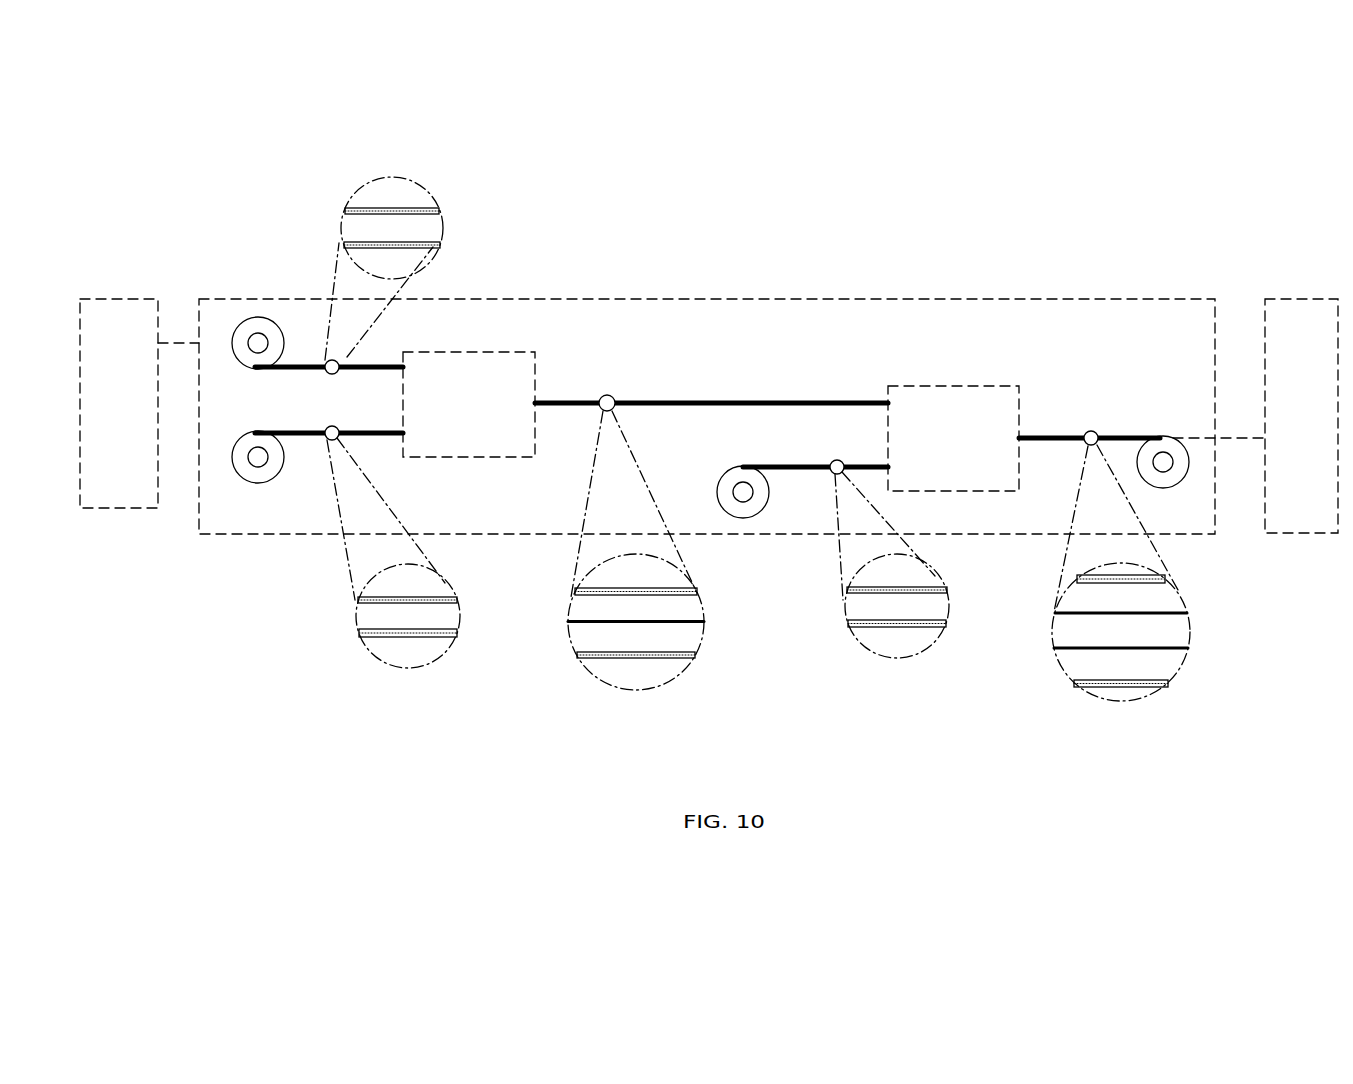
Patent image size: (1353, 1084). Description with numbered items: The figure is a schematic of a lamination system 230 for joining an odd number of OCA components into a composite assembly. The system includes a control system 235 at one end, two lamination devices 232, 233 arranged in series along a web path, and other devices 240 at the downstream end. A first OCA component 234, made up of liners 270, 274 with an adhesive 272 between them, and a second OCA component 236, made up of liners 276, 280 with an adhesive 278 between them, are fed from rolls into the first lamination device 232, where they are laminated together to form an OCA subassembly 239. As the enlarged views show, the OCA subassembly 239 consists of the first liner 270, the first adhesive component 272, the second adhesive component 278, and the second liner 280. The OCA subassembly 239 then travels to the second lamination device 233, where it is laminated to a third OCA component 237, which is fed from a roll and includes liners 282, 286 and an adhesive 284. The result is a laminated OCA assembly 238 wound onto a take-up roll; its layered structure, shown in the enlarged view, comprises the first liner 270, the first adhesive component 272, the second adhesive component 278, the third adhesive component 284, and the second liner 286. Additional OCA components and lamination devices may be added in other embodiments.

The lamination system 230 is at (893, 265).
The lamination device 232 is at (512, 350).
The lamination device 233 is at (997, 385).
The first OCA component 234 is at (305, 364).
The control system 235 is at (114, 265).
The second OCA component 236 is at (301, 436).
The third OCA component 237 is at (801, 470).
The laminated OCA assembly 238 is at (1056, 436).
The OCA subassembly 239 is at (572, 401).
The other devices 240 is at (1273, 286).
The first liner 270 is at (405, 210).
The adhesive 272 is at (363, 222).
The liner 274 is at (417, 246).
The liner 276 is at (435, 600).
The adhesive 278 is at (425, 620).
The second liner 280 is at (375, 635).
The liner 282 is at (925, 590).
The adhesive 284 is at (915, 612).
The second liner 286 is at (865, 625).